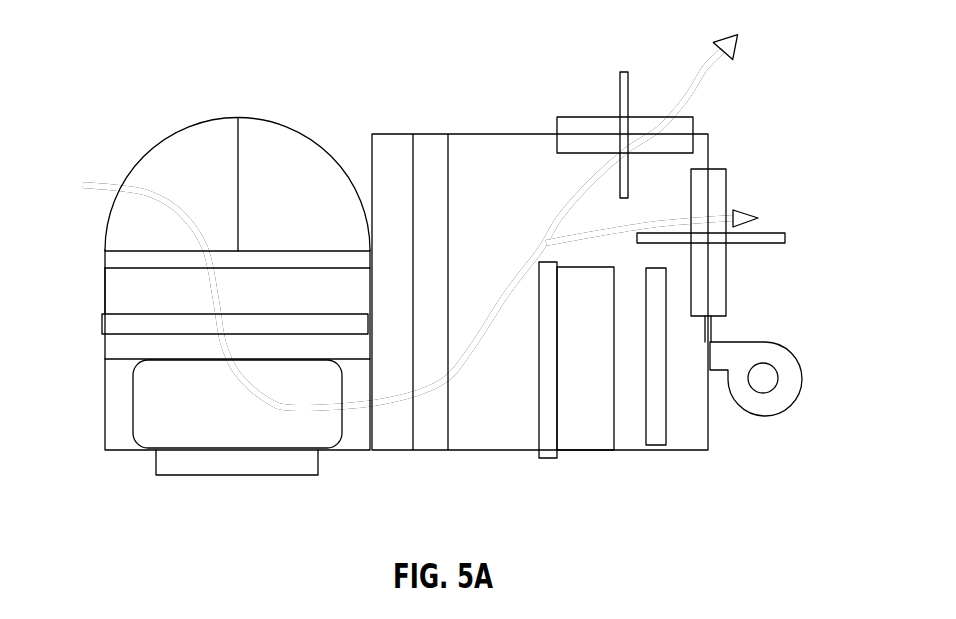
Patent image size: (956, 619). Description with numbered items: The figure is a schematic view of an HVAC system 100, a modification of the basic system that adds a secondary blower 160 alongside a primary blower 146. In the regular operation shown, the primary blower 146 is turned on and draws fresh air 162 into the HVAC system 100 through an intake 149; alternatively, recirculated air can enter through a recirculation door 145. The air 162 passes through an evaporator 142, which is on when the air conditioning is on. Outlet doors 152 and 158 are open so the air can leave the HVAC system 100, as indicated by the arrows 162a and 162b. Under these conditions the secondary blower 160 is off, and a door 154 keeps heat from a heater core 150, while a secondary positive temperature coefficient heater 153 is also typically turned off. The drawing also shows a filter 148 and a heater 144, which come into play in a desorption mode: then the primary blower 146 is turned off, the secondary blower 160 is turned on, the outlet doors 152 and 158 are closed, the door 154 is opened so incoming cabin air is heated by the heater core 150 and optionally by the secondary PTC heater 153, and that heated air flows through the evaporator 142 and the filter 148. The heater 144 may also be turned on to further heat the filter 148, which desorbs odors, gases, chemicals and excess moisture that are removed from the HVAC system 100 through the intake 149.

The HVAC system 100 is at (174, 38).
The evaporator 142 is at (432, 147).
The heater 144 is at (113, 325).
The recirculation door 145 is at (288, 138).
The primary blower 146 is at (195, 432).
The filter 148 is at (105, 290).
The intake 149 is at (193, 142).
The heater core 150 is at (597, 413).
The outlet door 152 is at (618, 93).
The secondary positive temperature coefficient (PTC) heater 153 is at (657, 450).
The door 154 is at (537, 405).
The outlet door 158 is at (760, 233).
The secondary blower 160 is at (790, 378).
The fresh air 162 is at (100, 185).
The arrow 162a is at (713, 73).
The arrow 162b is at (728, 210).